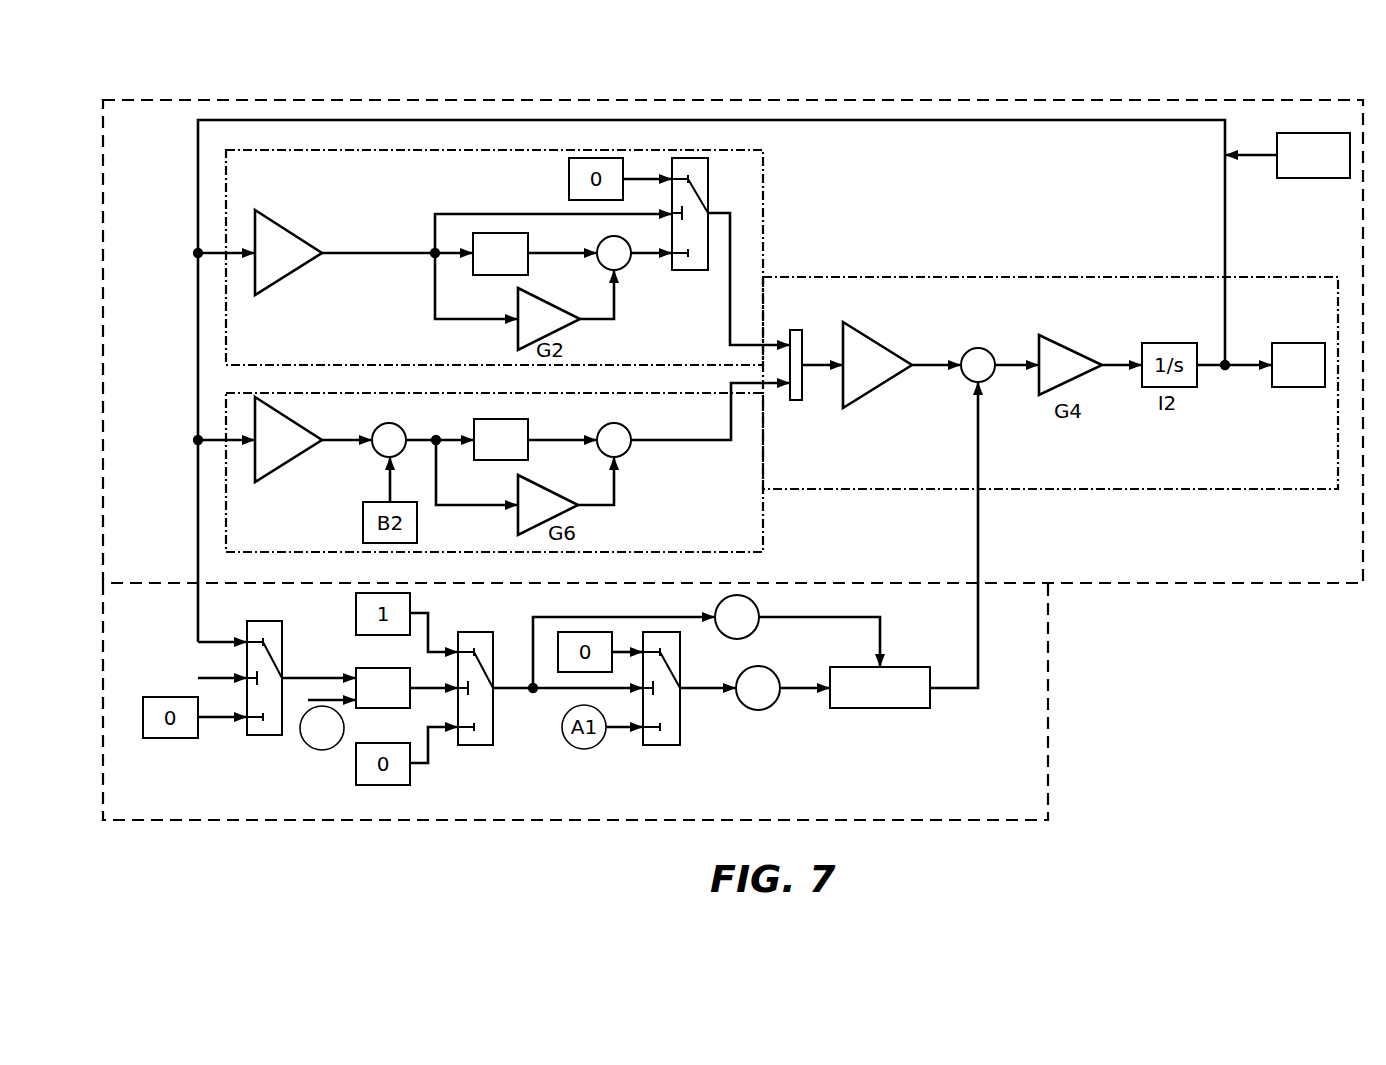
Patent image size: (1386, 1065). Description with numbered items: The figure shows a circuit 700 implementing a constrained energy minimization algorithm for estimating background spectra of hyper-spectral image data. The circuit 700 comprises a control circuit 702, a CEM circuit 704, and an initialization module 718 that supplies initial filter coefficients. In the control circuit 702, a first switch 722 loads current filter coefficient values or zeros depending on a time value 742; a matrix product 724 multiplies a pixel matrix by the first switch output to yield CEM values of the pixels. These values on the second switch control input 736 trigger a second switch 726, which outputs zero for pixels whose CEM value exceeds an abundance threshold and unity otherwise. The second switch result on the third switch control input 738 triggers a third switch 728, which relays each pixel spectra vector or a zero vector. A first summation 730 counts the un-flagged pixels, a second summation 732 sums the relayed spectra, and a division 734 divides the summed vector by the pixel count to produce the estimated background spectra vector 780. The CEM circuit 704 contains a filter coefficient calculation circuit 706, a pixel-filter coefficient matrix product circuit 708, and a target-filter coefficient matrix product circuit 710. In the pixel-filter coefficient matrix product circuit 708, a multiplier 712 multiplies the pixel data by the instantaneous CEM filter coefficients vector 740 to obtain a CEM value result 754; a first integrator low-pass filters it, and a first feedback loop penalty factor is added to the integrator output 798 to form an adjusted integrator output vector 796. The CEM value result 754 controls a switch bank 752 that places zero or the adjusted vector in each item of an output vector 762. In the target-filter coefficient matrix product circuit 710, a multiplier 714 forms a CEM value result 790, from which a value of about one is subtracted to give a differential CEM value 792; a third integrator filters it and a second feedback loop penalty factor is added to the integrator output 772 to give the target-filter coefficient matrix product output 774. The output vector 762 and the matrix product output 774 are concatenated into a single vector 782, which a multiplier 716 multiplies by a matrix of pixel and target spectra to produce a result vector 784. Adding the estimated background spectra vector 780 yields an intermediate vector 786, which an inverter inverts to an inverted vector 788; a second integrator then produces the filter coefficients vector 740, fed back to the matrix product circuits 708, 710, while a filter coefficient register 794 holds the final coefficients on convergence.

The circuit 700 is at (937, 55).
The control circuit 702 is at (1050, 688).
The CEM circuit 704 is at (1272, 98).
The filter coefficient calculation circuit 706 is at (1110, 492).
The pixel-filter coefficient matrix product circuit 708 is at (765, 190).
The target-filter coefficient matrix product circuit 710 is at (766, 503).
The multiplier 712 is at (287, 283).
The multiplier 714 is at (265, 483).
The multiplier 716 is at (875, 390).
The initialization module 718 is at (1315, 180).
The first switch 722 is at (257, 740).
The matrix product 724 is at (367, 710).
The second switch 726 is at (478, 750).
The third switch 728 is at (663, 750).
The first summation 730 is at (757, 713).
The second summation 732 is at (762, 607).
The division 734 is at (910, 710).
The second switch control input 736 is at (468, 693).
The third switch control input 738 is at (653, 693).
The instantaneous CEM filter coefficients vector 740 is at (1094, 118).
The time value 742 is at (245, 674).
The switch bank 752 is at (690, 157).
The CEM value result 754 is at (432, 248).
The output vector 762 is at (733, 258).
The integrator I3 output 772 is at (562, 420).
The target-filter coefficient matrix product output 774 is at (658, 443).
The estimated background spectra vector 780 is at (982, 677).
The single vector 782 is at (796, 405).
The result vector 784 is at (927, 362).
The intermediate vector 786 is at (1008, 358).
The inverted vector 788 is at (1120, 358).
The CEM value result 790 is at (347, 450).
The differential CEM value 792 is at (446, 436).
The filter coefficient register 794 is at (1297, 340).
The adjusted integrator output vector 796 is at (643, 257).
The integrator I1 output 798 is at (557, 257).